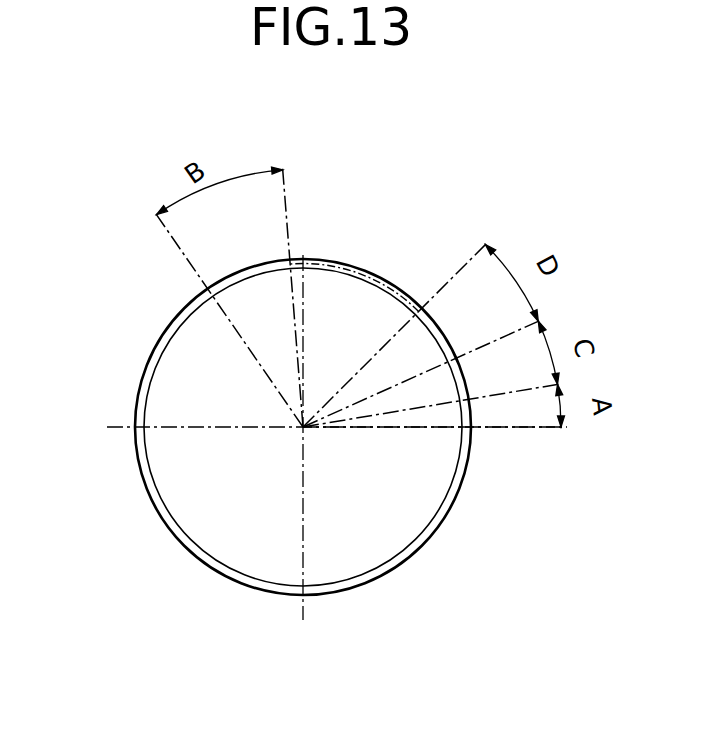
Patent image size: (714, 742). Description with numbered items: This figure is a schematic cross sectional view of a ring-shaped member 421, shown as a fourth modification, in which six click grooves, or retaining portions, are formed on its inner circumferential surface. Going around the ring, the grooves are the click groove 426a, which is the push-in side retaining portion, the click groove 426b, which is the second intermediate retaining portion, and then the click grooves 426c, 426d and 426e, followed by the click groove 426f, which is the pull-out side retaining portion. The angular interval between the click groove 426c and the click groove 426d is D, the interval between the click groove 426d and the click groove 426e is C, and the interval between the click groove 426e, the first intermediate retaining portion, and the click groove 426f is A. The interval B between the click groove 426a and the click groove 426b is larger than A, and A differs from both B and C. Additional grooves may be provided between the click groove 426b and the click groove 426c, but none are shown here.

The ring-shaped member 421 is at (158, 338).
The click groove 426a is at (207, 292).
The click groove 426b is at (297, 265).
The click groove 426c is at (421, 307).
The click groove 426d is at (457, 357).
The click groove 426e is at (470, 399).
The click groove 426f is at (474, 428).